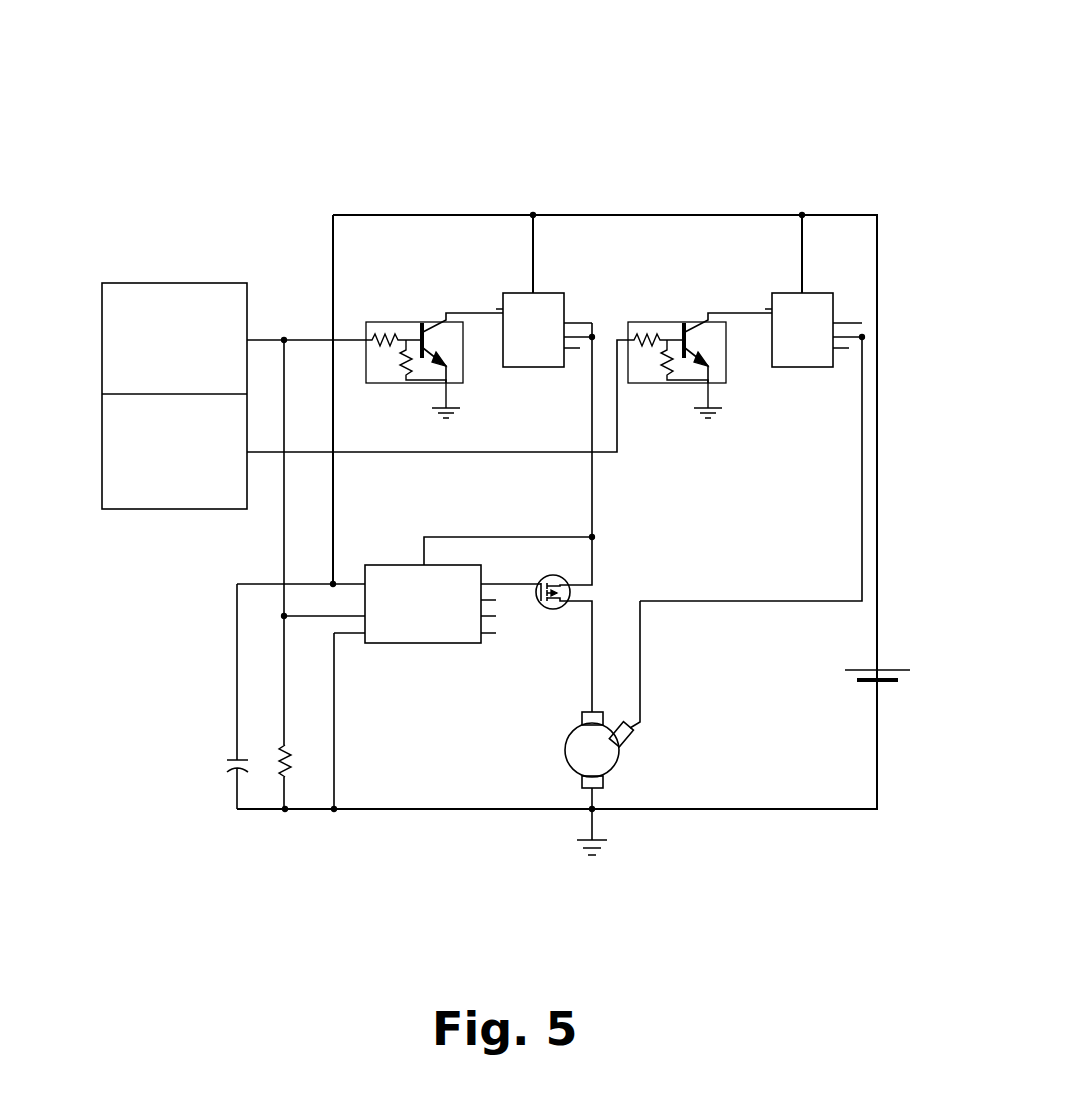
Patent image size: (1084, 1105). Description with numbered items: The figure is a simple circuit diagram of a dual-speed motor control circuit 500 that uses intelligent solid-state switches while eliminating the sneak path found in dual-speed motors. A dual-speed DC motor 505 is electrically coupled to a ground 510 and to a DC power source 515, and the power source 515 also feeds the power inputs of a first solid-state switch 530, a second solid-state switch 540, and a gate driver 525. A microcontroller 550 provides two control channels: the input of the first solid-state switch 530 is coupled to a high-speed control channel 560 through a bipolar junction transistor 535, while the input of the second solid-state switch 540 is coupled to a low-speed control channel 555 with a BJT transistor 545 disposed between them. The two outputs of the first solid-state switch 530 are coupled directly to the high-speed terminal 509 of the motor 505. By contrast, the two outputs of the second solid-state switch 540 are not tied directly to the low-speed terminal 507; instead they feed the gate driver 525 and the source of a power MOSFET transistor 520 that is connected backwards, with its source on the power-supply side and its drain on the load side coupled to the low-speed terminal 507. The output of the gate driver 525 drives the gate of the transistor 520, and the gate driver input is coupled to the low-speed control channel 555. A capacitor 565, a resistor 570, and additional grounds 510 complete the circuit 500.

The dual-speed motor control circuit 500 is at (442, 60).
The dual-speed DC motor 505 is at (608, 737).
The low-speed terminal 507 is at (582, 718).
The high-speed terminal 509 is at (625, 747).
The ground 510 is at (590, 828).
The DC power source 515 is at (845, 670).
The power MOSFET transistor 520 is at (604, 594).
The gate driver 525 is at (378, 564).
The first solid-state switch 530 is at (820, 291).
The bipolar junction transistor 535 is at (655, 320).
The second solid-state switch 540 is at (553, 290).
The BJT transistor 545 is at (416, 320).
The microcontroller 550 is at (174, 341).
The low-speed control channel 555 is at (174, 354).
The high-speed control channel 560 is at (174, 464).
The capacitor 565 is at (227, 760).
The resistor 570 is at (285, 778).